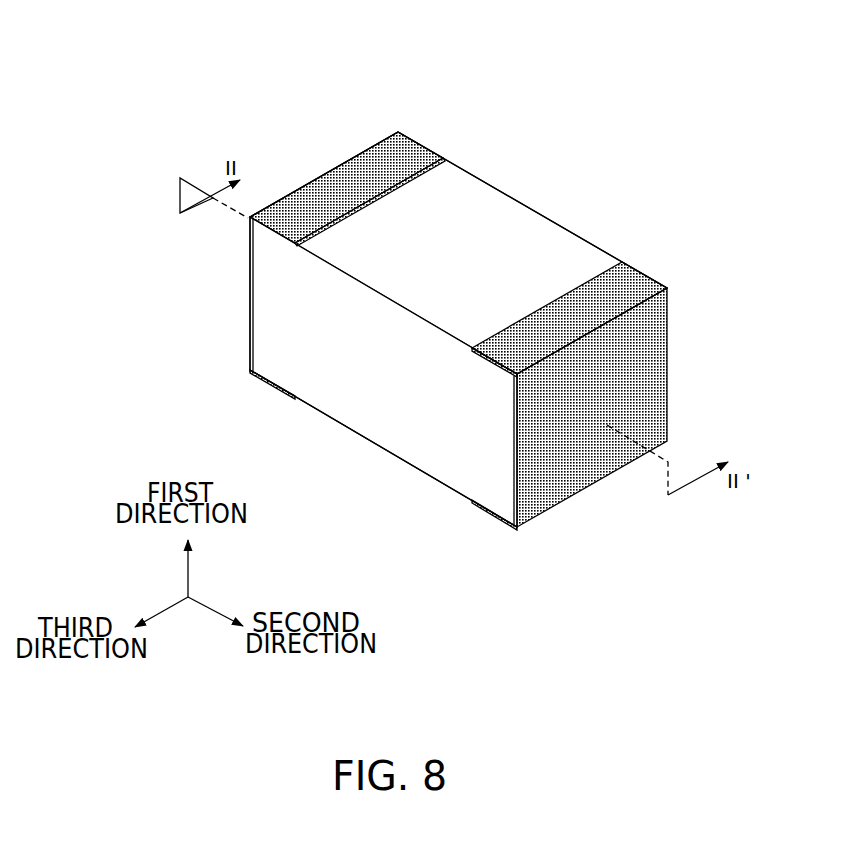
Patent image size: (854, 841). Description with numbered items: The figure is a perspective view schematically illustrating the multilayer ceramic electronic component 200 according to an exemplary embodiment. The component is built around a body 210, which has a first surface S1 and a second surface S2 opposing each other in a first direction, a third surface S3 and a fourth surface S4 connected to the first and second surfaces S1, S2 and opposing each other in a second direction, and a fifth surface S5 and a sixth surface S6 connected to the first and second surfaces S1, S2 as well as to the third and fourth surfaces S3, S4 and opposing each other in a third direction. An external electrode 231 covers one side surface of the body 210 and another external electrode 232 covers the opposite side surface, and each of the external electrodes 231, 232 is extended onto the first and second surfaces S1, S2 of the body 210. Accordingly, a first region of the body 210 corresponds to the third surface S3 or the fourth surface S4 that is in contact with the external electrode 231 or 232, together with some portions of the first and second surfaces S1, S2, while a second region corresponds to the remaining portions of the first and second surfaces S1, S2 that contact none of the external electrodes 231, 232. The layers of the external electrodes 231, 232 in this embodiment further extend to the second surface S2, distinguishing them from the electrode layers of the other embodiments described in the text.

The multilayer ceramic electronic component 200 is at (250, 39).
The body 210 is at (477, 220).
The external electrode 231 is at (418, 147).
The external electrode 232 is at (645, 276).
The first surface S1 is at (375, 437).
The second surface S2 is at (538, 262).
The third surface S3 is at (325, 162).
The fourth surface S4 is at (630, 355).
The fifth surface S5 is at (468, 445).
The sixth surface S6 is at (583, 237).